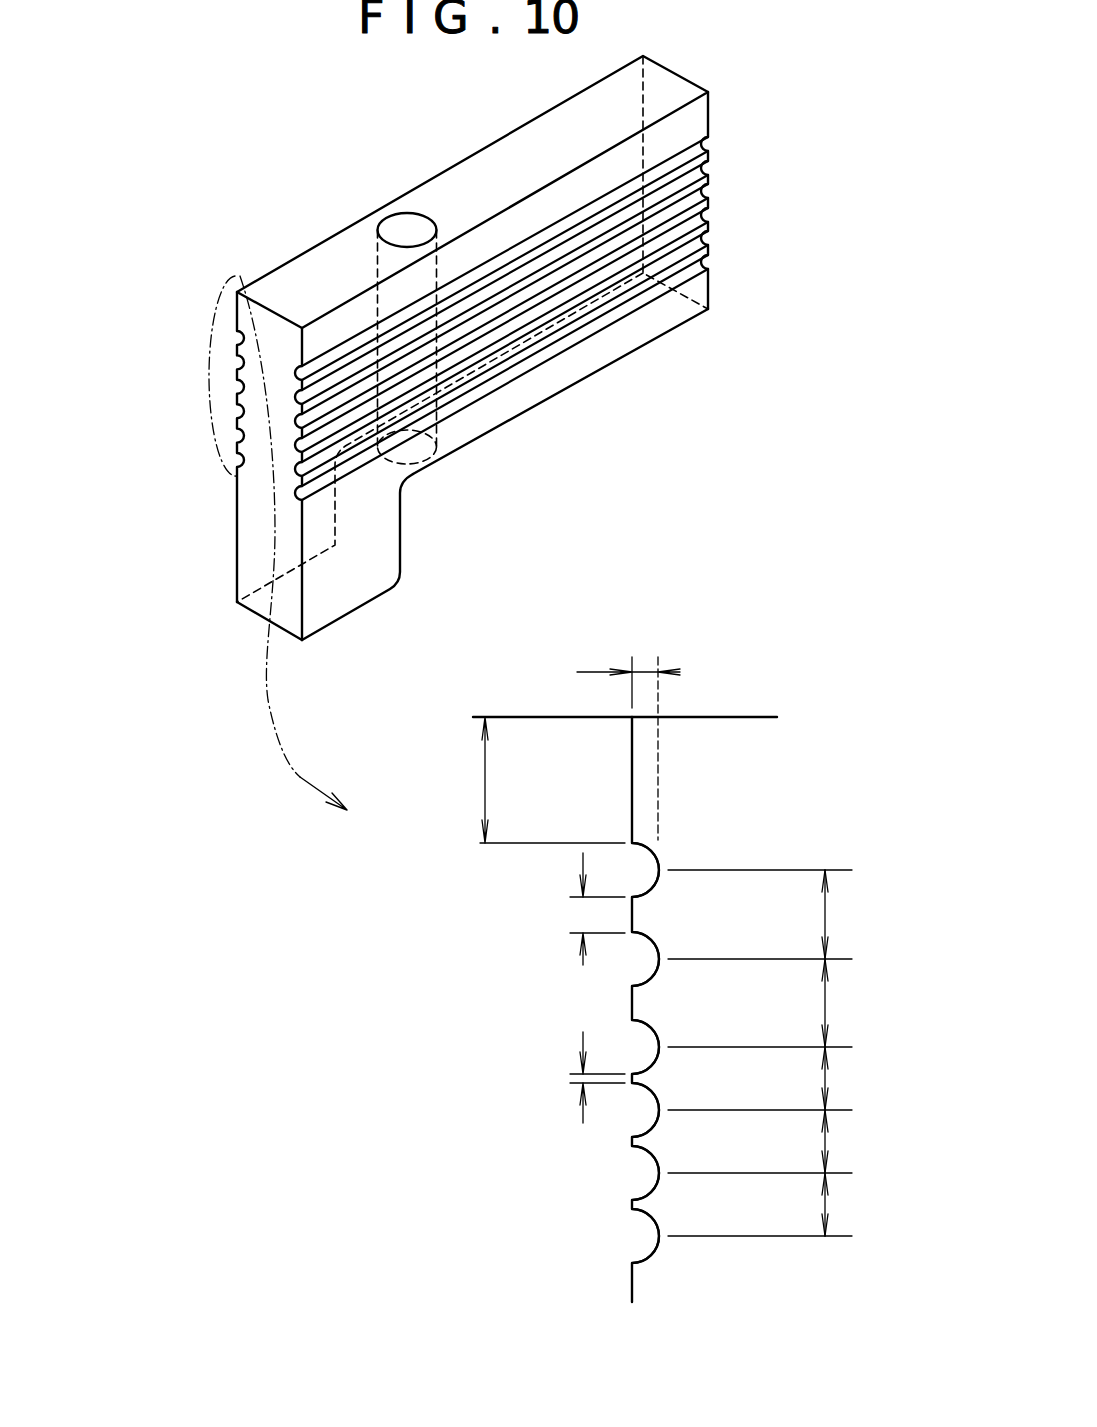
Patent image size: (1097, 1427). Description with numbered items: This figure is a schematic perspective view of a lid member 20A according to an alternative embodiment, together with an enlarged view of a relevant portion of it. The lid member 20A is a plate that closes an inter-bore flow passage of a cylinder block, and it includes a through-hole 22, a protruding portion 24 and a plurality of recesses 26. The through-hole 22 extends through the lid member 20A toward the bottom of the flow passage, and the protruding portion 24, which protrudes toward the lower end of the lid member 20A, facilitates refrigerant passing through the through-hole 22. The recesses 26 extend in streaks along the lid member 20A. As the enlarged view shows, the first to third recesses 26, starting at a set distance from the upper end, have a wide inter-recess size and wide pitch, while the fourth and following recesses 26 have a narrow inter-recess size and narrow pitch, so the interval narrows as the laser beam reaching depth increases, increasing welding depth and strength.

The lid member 20A is at (313, 139).
The through-hole 22 is at (407, 237).
The protruding portion 24 is at (347, 563).
The recesses 26 is at (240, 453).